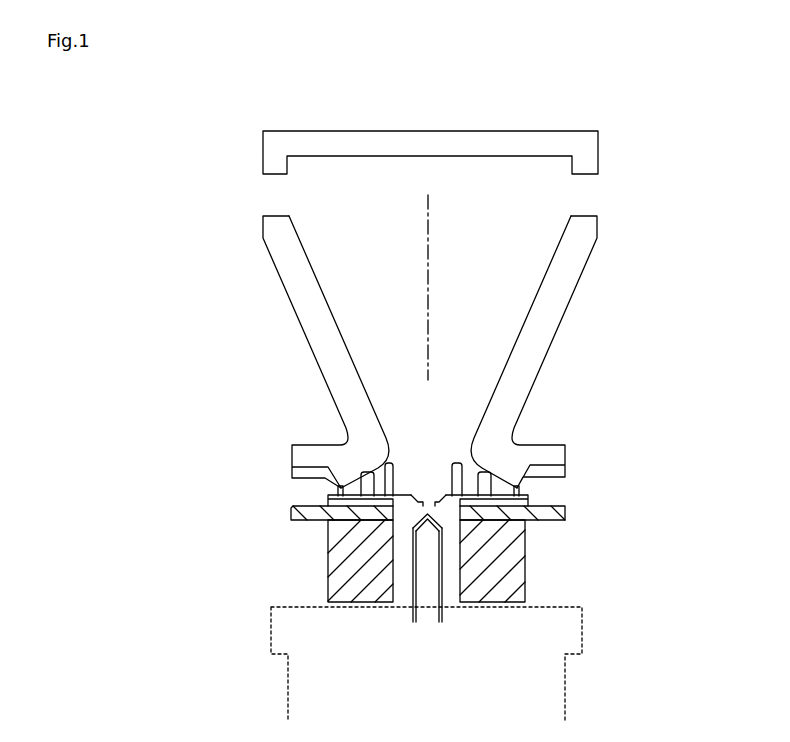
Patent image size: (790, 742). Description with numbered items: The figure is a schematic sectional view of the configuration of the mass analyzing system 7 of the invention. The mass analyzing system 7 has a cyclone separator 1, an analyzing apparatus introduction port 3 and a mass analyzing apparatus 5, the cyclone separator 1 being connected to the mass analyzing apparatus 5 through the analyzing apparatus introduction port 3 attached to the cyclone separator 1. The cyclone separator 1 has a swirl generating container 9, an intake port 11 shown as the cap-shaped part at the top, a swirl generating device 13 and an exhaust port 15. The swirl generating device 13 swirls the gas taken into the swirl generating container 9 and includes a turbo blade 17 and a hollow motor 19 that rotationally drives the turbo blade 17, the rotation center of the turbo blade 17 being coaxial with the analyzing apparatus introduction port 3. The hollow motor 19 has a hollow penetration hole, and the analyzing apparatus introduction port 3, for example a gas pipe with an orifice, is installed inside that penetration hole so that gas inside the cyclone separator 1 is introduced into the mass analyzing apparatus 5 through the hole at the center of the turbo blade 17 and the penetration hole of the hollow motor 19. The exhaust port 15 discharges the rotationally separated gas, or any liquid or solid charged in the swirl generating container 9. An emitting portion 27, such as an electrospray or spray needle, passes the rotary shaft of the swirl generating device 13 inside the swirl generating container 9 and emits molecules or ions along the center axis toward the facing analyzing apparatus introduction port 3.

The cyclone separator 1 is at (467, 302).
The analyzing apparatus introduction port 3 is at (426, 573).
The mass analyzing apparatus 5 is at (512, 700).
The mass analyzing system 7 is at (491, 91).
The swirl generating container 9 is at (517, 389).
The intake port 11 is at (592, 192).
The swirl generating device 13 is at (484, 536).
The exhaust port 15 is at (315, 491).
The turbo blade 17 is at (528, 492).
The hollow motor 19 is at (498, 578).
The emitting portion 27 is at (428, 500).